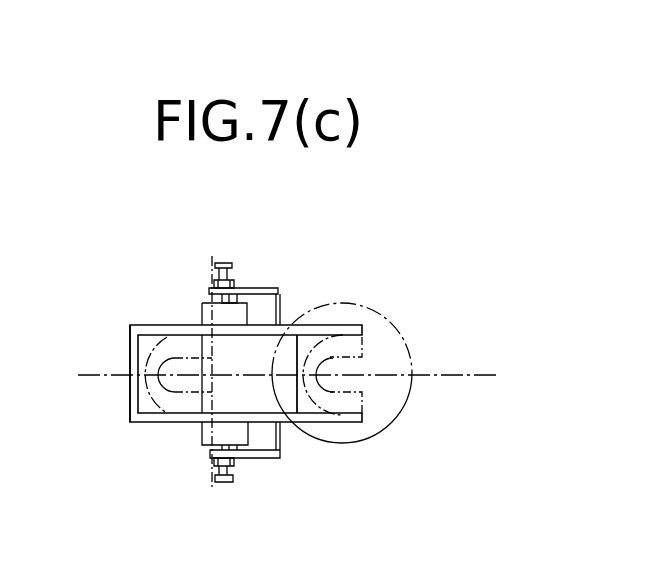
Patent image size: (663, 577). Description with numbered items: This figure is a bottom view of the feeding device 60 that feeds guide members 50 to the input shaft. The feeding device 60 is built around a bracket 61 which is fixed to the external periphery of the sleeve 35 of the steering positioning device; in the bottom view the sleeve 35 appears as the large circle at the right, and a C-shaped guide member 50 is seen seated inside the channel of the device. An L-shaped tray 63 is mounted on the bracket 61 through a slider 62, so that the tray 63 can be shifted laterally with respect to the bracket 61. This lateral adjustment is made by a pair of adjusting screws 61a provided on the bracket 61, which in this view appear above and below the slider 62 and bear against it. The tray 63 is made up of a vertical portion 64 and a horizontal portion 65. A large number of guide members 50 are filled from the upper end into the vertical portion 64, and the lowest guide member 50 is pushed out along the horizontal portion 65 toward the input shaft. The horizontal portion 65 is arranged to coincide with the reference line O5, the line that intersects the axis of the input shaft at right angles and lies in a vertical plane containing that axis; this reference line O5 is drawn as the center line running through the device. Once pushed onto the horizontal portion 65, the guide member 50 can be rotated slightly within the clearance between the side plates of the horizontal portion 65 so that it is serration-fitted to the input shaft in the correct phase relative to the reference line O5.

The reference line O5 is at (101, 373).
The sleeve 35 is at (376, 308).
The guide member 50 is at (170, 414).
The feeding device 60 is at (172, 317).
The bracket 61 is at (262, 300).
The adjusting screw 61a is at (226, 261).
The slider 62 is at (227, 317).
The L-shaped tray 63 is at (130, 346).
The vertical portion 64 is at (138, 394).
The horizontal portion 65 is at (285, 400).